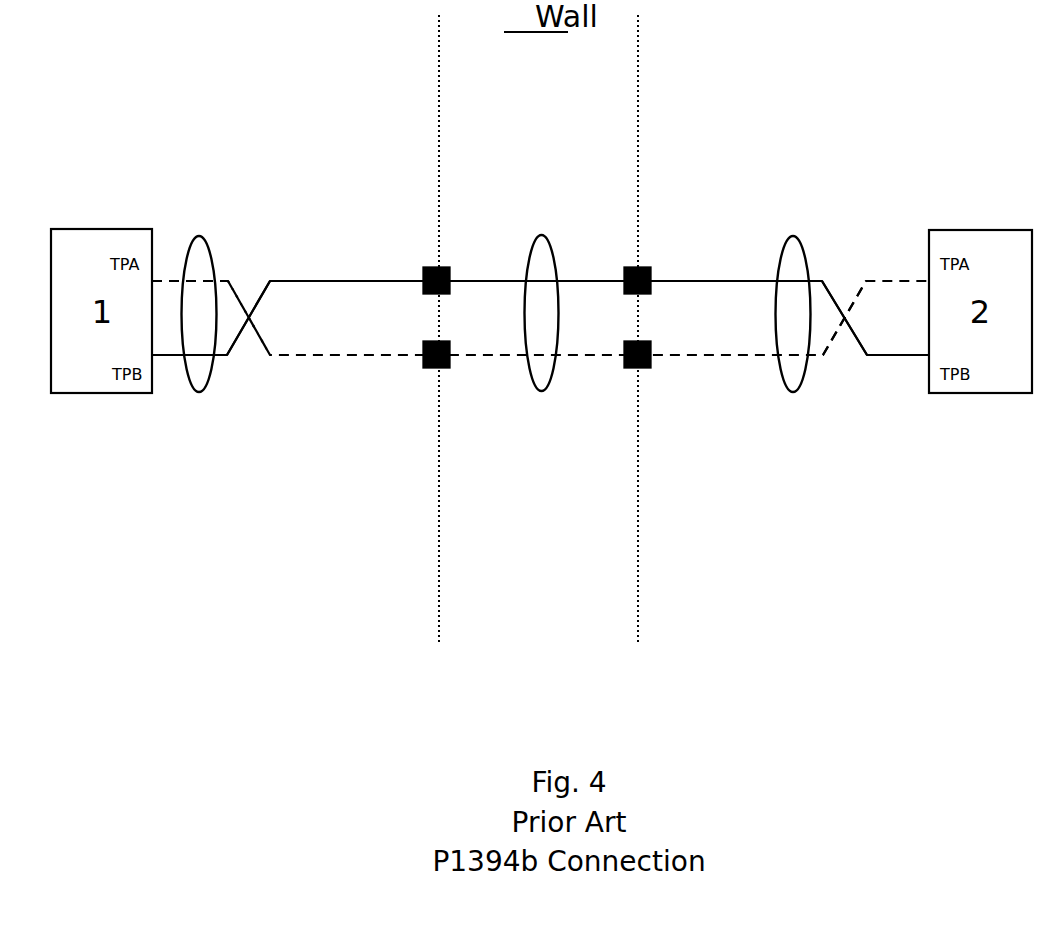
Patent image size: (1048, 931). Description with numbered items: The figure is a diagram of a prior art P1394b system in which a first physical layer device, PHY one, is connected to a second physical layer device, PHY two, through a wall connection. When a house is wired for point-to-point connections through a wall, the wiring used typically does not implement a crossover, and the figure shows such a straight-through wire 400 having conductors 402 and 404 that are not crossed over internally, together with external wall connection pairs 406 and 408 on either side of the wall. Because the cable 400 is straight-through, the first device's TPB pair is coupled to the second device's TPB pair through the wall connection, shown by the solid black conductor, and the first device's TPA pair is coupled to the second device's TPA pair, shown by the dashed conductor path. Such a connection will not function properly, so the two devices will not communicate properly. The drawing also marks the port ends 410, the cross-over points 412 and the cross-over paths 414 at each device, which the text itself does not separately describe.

The straight-through wire 400 is at (542, 237).
The conductor 402 is at (515, 355).
The conductor 404 is at (593, 283).
The external wall connection pair 406 is at (440, 370).
The external wall connection pair 408 is at (652, 363).
The device port connector 410 is at (199, 228).
The TPA-to-TPB crossover 412 is at (270, 280).
The TPB-to-TPA crossover 414 is at (270, 356).